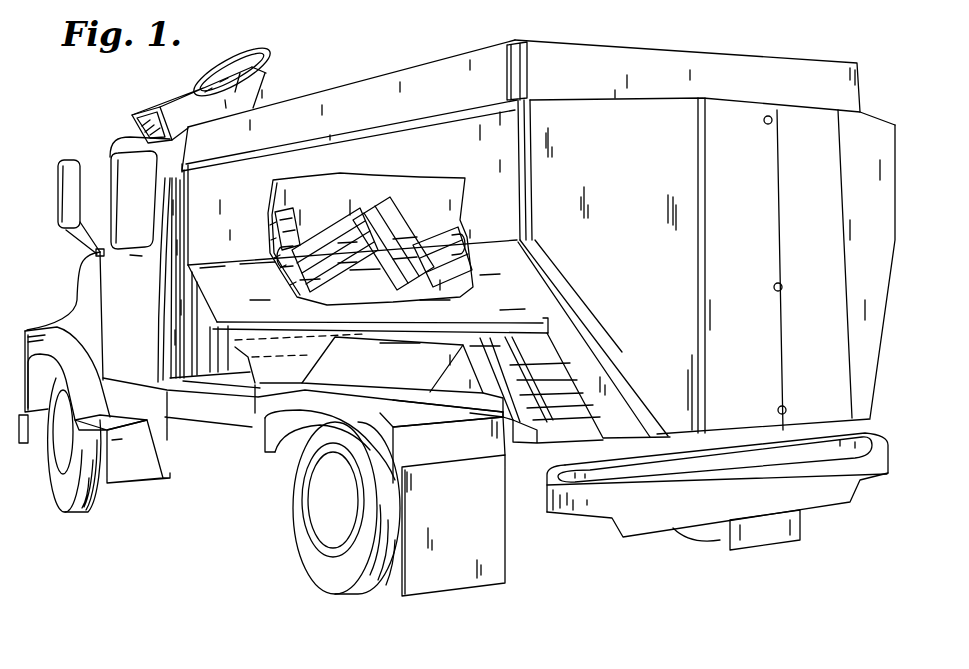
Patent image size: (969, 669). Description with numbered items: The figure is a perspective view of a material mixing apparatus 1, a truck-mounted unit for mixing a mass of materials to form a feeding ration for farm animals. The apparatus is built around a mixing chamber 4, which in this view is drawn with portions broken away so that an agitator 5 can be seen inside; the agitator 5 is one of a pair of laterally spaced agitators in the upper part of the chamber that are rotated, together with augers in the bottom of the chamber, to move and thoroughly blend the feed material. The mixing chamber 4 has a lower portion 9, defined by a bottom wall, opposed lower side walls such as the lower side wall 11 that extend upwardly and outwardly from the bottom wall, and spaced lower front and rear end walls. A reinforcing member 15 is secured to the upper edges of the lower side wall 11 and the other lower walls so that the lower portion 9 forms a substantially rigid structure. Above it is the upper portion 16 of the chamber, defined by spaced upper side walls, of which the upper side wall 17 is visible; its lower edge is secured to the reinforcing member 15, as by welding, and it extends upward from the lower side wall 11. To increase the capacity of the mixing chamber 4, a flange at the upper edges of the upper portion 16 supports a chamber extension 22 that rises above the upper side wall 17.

The material mixing apparatus 1 is at (410, 50).
The mixing chamber 4 is at (331, 199).
The agitator 5 is at (418, 235).
The lower portion 9 is at (314, 353).
The lower side wall 11 is at (256, 354).
The reinforcing member 15 is at (553, 322).
The upper portion 16 is at (490, 131).
The upper side wall 17 is at (292, 172).
The chamber extension 22 is at (598, 50).